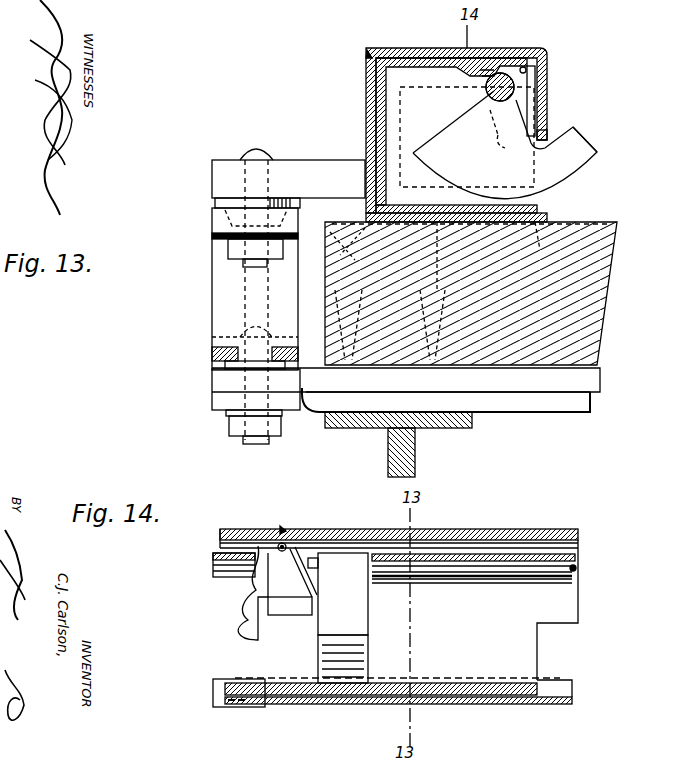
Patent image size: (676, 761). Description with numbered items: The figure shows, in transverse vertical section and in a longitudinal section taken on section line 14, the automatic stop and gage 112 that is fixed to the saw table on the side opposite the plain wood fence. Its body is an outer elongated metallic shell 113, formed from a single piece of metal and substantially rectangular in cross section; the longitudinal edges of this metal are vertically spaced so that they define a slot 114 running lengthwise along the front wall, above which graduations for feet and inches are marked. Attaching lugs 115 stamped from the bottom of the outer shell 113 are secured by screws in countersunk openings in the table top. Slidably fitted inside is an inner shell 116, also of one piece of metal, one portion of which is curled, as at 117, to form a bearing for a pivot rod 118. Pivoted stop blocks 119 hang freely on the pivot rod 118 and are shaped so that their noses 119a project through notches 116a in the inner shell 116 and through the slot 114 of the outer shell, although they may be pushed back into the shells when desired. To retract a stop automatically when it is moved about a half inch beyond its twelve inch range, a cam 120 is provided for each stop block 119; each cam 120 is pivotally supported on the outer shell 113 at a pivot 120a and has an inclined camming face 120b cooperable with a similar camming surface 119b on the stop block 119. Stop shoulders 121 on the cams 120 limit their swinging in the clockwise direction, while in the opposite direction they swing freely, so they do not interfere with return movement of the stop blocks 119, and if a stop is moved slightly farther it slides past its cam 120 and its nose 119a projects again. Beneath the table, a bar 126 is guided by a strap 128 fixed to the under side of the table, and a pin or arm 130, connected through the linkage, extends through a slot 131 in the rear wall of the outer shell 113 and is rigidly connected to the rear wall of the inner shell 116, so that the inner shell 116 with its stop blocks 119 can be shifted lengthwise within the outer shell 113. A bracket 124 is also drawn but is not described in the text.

In FIG. 13, the section line 14 is at (471, 293).
In FIG. 13, the automatic stop and gage 112 is at (369, 52).
In FIG. 14, the automatic stop and gage 112 is at (283, 530).
In FIG. 13, the outer elongated metallic shell 113 is at (498, 46).
In FIG. 14, the outer elongated metallic shell 113 is at (548, 528).
In FIG. 13, the slot 114 is at (541, 140).
In FIG. 14, the slot 114 is at (565, 624).
In FIG. 13, the attaching lugs 115 is at (350, 236).
In FIG. 14, the attaching lugs 115 is at (255, 704).
In FIG. 13, the inner shell 116 is at (420, 46).
In FIG. 14, the inner shell 116 is at (508, 657).
In FIG. 13, the notches 116a is at (538, 172).
In FIG. 14, the notches 116a is at (373, 659).
In FIG. 13, the curled portion 117 is at (494, 92).
In FIG. 14, the curled portion 117 is at (535, 582).
In FIG. 13, the pivot rod 118 is at (487, 78).
In FIG. 14, the pivot rod 118 is at (577, 568).
In FIG. 13, the pivoted stop blocks 119 is at (470, 173).
In FIG. 14, the pivoted stop blocks 119 is at (350, 605).
In FIG. 13, the noses 119a is at (598, 152).
In FIG. 13, the camming surfaces 119b is at (511, 137).
In FIG. 13, the cam 120 is at (535, 80).
In FIG. 14, the cam 120 is at (266, 582).
In FIG. 13, the pivot 120a is at (526, 70).
In FIG. 14, the pivot 120a is at (292, 546).
In FIG. 14, the camming faces 120b is at (286, 616).
In FIG. 14, the stop shoulders 121 is at (232, 528).
In FIG. 13, the bracket 124 is at (212, 306).
In FIG. 13, the bar 126 is at (532, 404).
In FIG. 13, the strap 128 is at (442, 428).
In FIG. 13, the pin or arm 130 is at (327, 166).
In FIG. 13, the slot 131 is at (368, 164).